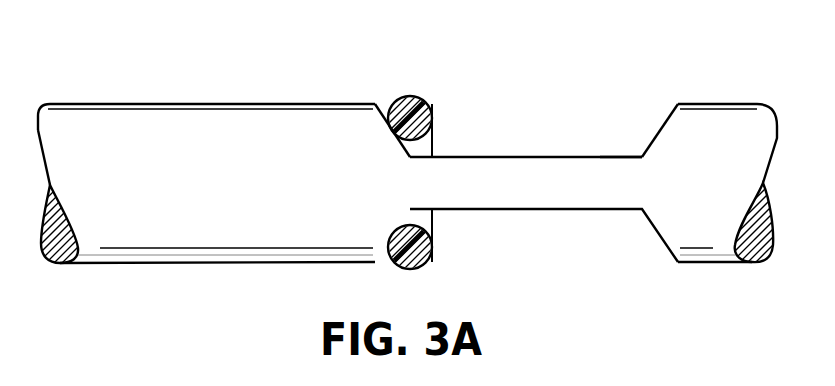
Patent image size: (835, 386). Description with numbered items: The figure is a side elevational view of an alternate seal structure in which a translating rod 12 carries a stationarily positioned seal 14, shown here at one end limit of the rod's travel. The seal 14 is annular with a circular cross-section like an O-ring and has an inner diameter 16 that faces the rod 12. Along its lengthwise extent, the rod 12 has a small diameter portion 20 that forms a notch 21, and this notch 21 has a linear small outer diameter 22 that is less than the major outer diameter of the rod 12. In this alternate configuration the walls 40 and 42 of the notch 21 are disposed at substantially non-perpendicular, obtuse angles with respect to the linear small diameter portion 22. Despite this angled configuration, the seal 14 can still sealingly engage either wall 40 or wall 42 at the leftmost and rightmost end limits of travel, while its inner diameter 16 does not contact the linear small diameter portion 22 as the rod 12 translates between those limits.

The translating member 12 is at (733, 104).
The seal 14 is at (409, 91).
The inner diameter 16 is at (433, 146).
The small diameter portion 20 is at (542, 89).
The notch 21 is at (572, 142).
The outer diameter 22 is at (600, 155).
The wall 40 is at (386, 107).
The wall 42 is at (668, 114).